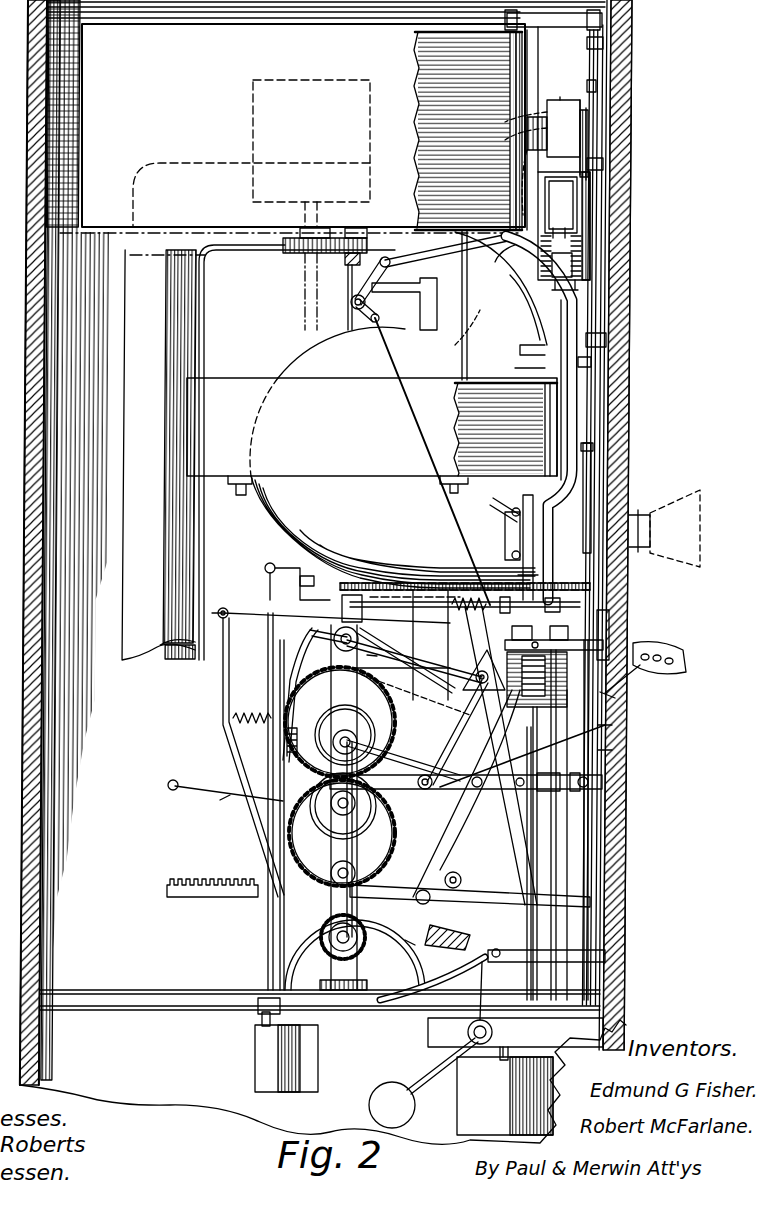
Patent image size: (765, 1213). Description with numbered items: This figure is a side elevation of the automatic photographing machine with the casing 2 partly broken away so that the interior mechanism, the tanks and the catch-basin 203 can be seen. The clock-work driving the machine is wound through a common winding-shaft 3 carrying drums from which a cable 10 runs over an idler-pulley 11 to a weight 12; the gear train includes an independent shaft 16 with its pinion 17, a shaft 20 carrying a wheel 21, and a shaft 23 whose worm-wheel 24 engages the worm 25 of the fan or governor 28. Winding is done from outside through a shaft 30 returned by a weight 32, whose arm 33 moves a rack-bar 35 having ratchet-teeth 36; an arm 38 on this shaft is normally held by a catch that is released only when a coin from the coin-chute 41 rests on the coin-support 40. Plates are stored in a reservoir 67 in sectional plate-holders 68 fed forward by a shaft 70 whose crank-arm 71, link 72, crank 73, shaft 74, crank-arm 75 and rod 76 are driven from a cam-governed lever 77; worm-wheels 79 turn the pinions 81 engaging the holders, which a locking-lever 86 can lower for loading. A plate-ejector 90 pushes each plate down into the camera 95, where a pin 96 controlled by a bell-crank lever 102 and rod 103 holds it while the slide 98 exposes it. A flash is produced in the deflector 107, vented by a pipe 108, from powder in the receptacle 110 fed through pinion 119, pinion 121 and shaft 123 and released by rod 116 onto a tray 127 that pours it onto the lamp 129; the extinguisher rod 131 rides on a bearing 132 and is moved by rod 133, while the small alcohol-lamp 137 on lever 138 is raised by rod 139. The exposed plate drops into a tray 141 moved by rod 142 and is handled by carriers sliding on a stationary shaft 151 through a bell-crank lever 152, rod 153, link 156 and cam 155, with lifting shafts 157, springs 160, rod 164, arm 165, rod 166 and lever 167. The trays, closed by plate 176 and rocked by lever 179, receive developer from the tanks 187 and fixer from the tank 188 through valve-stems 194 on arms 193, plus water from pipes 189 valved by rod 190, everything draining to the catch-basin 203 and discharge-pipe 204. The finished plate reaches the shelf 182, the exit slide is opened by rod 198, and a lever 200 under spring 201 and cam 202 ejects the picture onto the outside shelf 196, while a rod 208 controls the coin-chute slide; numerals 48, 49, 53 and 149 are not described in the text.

The casing 2 is at (615, 790).
The winding-shaft 3 is at (360, 937).
The cable 10 is at (445, 931).
The idler-pulley 11 is at (512, 912).
The weight 12 is at (505, 1091).
The independent shaft 16 is at (337, 883).
The pinion 17 is at (225, 795).
The shaft 20 is at (343, 806).
The wheel 21 is at (385, 820).
The shaft 23 is at (343, 733).
The worm-wheel 24 is at (388, 728).
The worm 25 is at (285, 742).
The fan or governor 28 is at (262, 1045).
The shaft 30 is at (470, 1032).
The weight 32 is at (372, 1090).
The arm 33 is at (463, 880).
The rack-bar 35 is at (366, 803).
The ratchet-teeth 36 is at (215, 880).
The arm 38 is at (492, 918).
The coin-support 40 is at (412, 935).
The coin-chute 41 is at (468, 825).
The lever rod 48 is at (219, 812).
The rod 49 is at (568, 838).
The bracket 53 is at (258, 1015).
The plate holder or reservoir 67 is at (572, 172).
The sectional plate-holders 68 is at (563, 205).
The shaft 70 is at (510, 255).
The crank-arm 71 is at (535, 181).
The link 72 is at (418, 236).
The crank 73 is at (373, 275).
The shaft 74 is at (352, 306).
The crank-arm 75 is at (372, 324).
The rod 76 is at (405, 346).
The lever 77 is at (522, 756).
The worm-wheels 79 is at (548, 498).
The pinions 81 is at (555, 222).
The locking-lever 86 is at (565, 294).
The plate-ejector 90 is at (553, 87).
The camera 95 is at (573, 530).
The pin 96 is at (542, 547).
The slide 98 is at (591, 460).
The bell-crank lever 102 is at (508, 505).
The rod 103 is at (508, 536).
The deflector 107 is at (268, 500).
The pipe 108 is at (202, 350).
The receptacle 110 is at (258, 105).
The rod 116 is at (460, 348).
The pinion 119 is at (298, 253).
The pinion 121 is at (345, 256).
The shaft 123 is at (347, 285).
The tray 127 is at (425, 283).
The lamp 129 is at (465, 591).
The rod 131 is at (292, 569).
The bearing 132 is at (313, 585).
The rod 133 is at (236, 593).
The alcohol-lamp 137 is at (390, 658).
The lever 138 is at (416, 695).
The rod 139 is at (500, 850).
The tray 141 is at (554, 624).
The rod 142 is at (569, 825).
The link 149 is at (406, 660).
The stationary shaft 151 is at (345, 652).
The bell-crank lever 152 is at (310, 638).
The rod 153 is at (305, 695).
The cam 155 is at (507, 612).
The link 156 is at (343, 603).
The longitudinal shafts 157 is at (465, 614).
The springs 160 is at (451, 612).
The rod 164 is at (414, 675).
The arm 165 is at (320, 652).
The rod 166 is at (451, 732).
The lever 167 is at (440, 768).
The plate 176 is at (553, 679).
The lever 179 is at (600, 753).
The shelf 182 is at (612, 632).
The tanks 187 is at (530, 420).
The tank 188 is at (372, 436).
The pipes 189 is at (520, 255).
The rod 190 is at (590, 48).
The arms 193 is at (524, 345).
The valve-stems 194 is at (519, 371).
The shelf 196 is at (665, 672).
The rod 198 is at (605, 697).
The lever 200 is at (223, 700).
The spring 201 is at (250, 705).
The cam 202 is at (372, 855).
The catch-basin 203 is at (524, 852).
The discharge-pipe 204 is at (534, 826).
The rod 208 is at (600, 727).